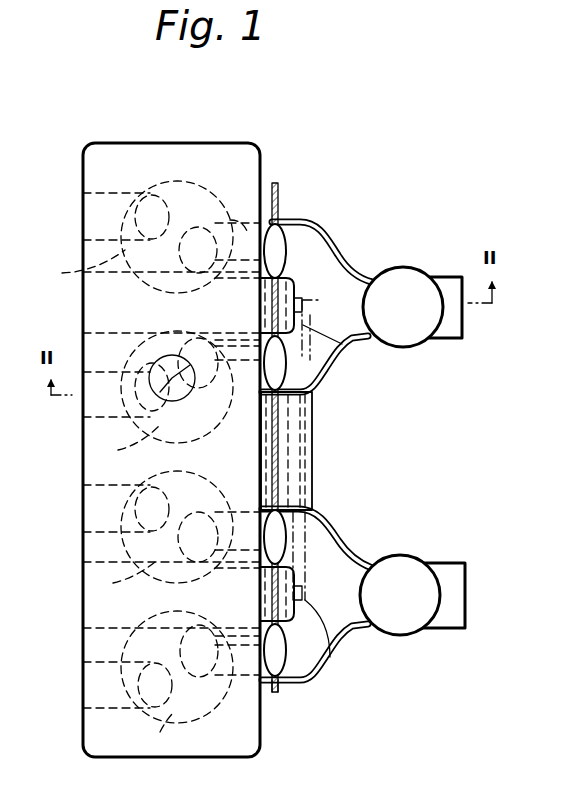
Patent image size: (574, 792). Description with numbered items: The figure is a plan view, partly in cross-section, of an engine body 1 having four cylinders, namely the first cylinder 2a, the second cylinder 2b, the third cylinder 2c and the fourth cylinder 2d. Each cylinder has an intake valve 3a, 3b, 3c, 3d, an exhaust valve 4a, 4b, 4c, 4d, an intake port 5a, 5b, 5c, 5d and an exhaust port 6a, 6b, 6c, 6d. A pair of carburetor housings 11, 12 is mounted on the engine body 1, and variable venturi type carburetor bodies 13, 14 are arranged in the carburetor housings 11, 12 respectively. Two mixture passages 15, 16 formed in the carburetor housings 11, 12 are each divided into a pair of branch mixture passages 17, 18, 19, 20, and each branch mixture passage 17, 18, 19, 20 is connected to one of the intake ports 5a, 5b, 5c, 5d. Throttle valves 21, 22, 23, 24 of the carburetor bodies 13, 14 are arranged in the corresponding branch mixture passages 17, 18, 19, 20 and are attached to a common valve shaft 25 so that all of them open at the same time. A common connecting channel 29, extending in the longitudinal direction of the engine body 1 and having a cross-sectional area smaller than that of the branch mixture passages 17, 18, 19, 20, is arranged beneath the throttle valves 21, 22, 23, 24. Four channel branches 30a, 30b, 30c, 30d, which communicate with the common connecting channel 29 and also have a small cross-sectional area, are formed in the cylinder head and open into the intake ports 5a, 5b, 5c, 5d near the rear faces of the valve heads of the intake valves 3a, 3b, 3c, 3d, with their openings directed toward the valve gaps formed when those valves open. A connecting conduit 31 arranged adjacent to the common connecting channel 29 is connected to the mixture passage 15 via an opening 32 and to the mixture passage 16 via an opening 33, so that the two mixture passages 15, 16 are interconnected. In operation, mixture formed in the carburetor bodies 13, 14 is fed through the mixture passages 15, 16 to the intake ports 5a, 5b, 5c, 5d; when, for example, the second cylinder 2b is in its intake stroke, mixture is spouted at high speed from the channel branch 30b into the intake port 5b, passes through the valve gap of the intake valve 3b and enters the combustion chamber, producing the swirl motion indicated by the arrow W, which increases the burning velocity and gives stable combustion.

The engine body 1 is at (273, 149).
The No. 1 cylinder 2a is at (94, 238).
The No. 2 cylinder 2b is at (121, 419).
The No. 3 cylinder 2c is at (119, 540).
The No. 4 cylinder 2d is at (127, 706).
The intake valve 3a is at (218, 210).
The intake valve 3b is at (193, 338).
The intake valve 3c is at (208, 512).
The intake valve 3d is at (200, 625).
The exhaust valve 4a is at (172, 194).
The exhaust valve 4b is at (150, 364).
The exhaust valve 4c is at (152, 487).
The exhaust valve 4d is at (153, 663).
The intake port 5a is at (245, 222).
The intake port 5b is at (247, 390).
The intake port 5c is at (247, 510).
The intake port 5d is at (249, 680).
The exhaust port 6a is at (88, 200).
The exhaust port 6b is at (98, 414).
The exhaust port 6c is at (99, 532).
The exhaust port 6d is at (106, 708).
The carburetor housing 11 is at (335, 235).
The carburetor housing 12 is at (348, 535).
The carburetor body 13 is at (407, 285).
The carburetor body 14 is at (401, 568).
The mixture passage 15 is at (339, 289).
The mixture passage 16 is at (347, 597).
The branch mixture passage 17 is at (288, 212).
The branch mixture passage 18 is at (296, 400).
The branch mixture passage 19 is at (300, 495).
The branch mixture passage 20 is at (294, 686).
The throttle valve 21 is at (289, 233).
The throttle valve 22 is at (290, 372).
The throttle valve 23 is at (282, 546).
The throttle valve 24 is at (282, 655).
The common valve shaft 25 is at (273, 695).
The common connecting channel 29 is at (344, 262).
The channel branch 30a is at (226, 278).
The channel branch 30b is at (232, 336).
The channel branch 30c is at (230, 568).
The channel branch 30d is at (233, 628).
The connecting conduit 31 is at (300, 467).
The opening 32 is at (348, 348).
The opening 33 is at (340, 656).
The swirl motion arrow W is at (185, 400).